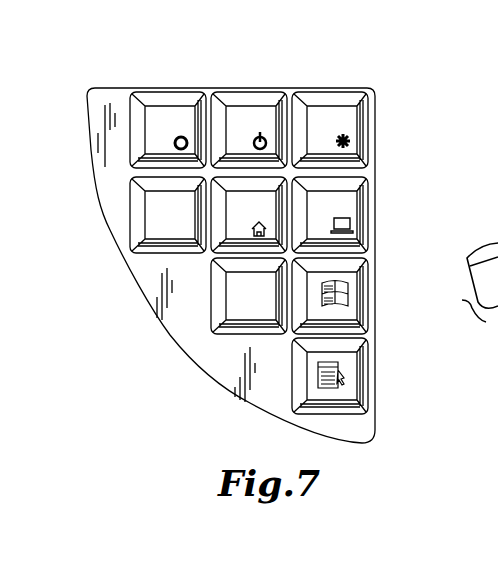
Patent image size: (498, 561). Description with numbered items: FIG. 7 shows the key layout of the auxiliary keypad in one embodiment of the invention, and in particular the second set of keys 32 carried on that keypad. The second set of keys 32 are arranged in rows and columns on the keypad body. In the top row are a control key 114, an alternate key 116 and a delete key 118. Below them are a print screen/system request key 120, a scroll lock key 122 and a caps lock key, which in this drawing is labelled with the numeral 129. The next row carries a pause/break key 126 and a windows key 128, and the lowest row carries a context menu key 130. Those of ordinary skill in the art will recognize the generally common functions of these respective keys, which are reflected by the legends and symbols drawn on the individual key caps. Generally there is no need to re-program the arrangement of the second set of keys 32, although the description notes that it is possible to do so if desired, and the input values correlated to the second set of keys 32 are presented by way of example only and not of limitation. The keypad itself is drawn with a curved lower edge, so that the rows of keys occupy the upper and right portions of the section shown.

The second set of keys 32 is at (391, 58).
The control key 114 is at (180, 112).
The alternate key 116 is at (262, 112).
The delete key 118 is at (345, 125).
The print screen/system request key 120 is at (147, 217).
The scroll lock key 122 is at (230, 228).
The pause/break key 126 is at (228, 298).
The windows key 128 is at (347, 308).
The Caps Lock key 129 is at (352, 210).
The context menu key 130 is at (348, 390).